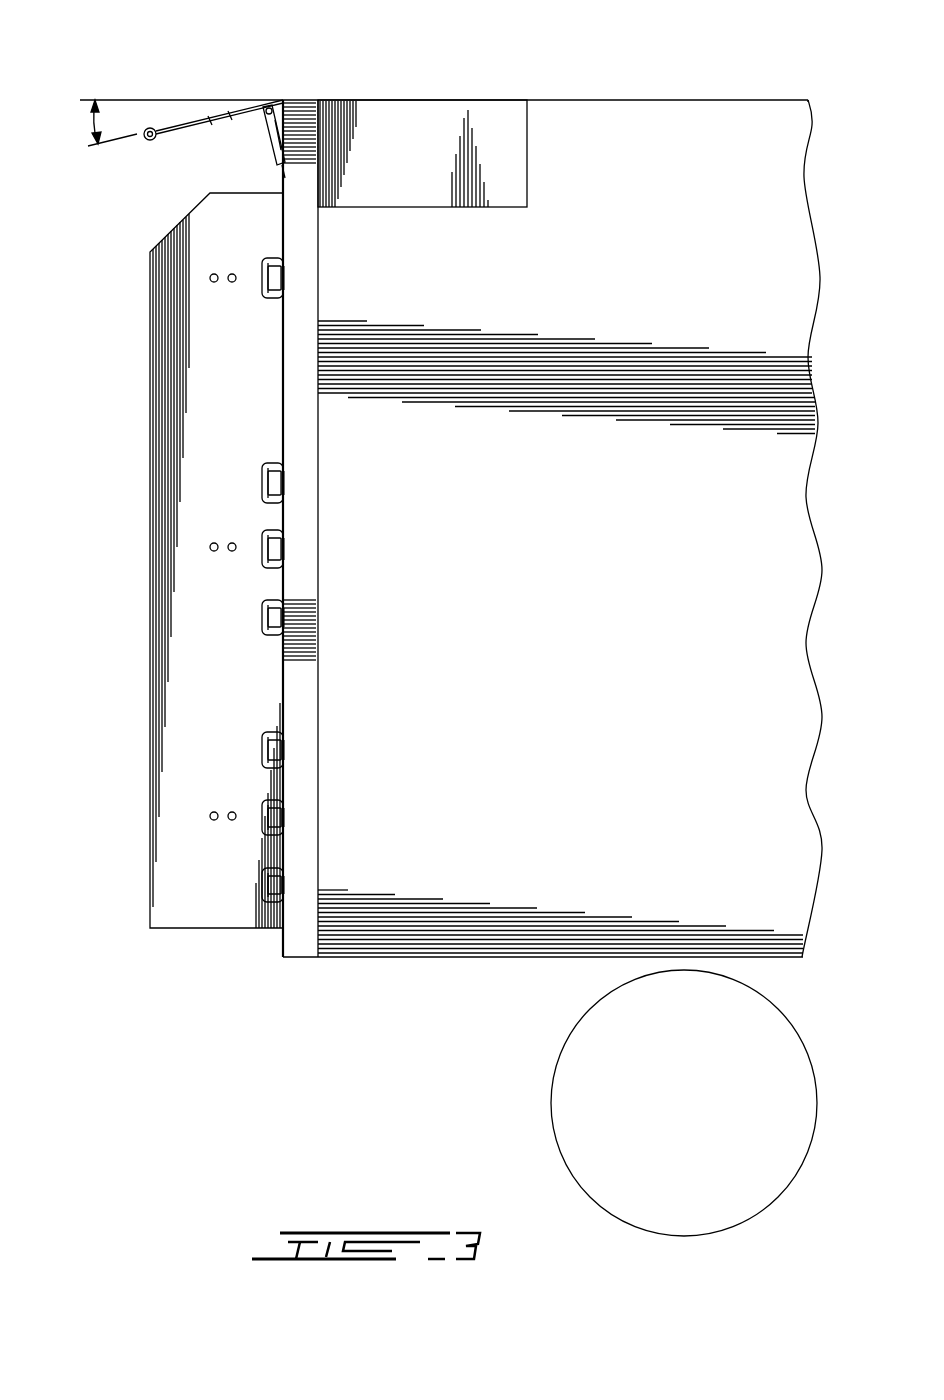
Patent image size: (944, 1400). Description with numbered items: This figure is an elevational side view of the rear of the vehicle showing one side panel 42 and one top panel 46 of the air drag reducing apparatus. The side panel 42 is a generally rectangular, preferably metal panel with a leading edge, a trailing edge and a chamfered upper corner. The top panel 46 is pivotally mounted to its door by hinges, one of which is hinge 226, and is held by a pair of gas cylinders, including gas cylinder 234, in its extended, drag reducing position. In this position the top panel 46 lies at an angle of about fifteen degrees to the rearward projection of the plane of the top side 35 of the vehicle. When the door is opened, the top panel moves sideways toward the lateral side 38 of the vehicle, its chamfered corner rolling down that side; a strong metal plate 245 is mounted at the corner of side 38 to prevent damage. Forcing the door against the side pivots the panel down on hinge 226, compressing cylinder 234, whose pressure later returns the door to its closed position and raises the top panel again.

The top side 35 is at (584, 96).
The side of the vehicle 38 is at (688, 258).
The side panel 42 is at (185, 507).
The top panel 46 is at (187, 112).
The hinge 226 is at (292, 125).
The gas cylinder 234 is at (266, 132).
The plate 245 is at (410, 158).